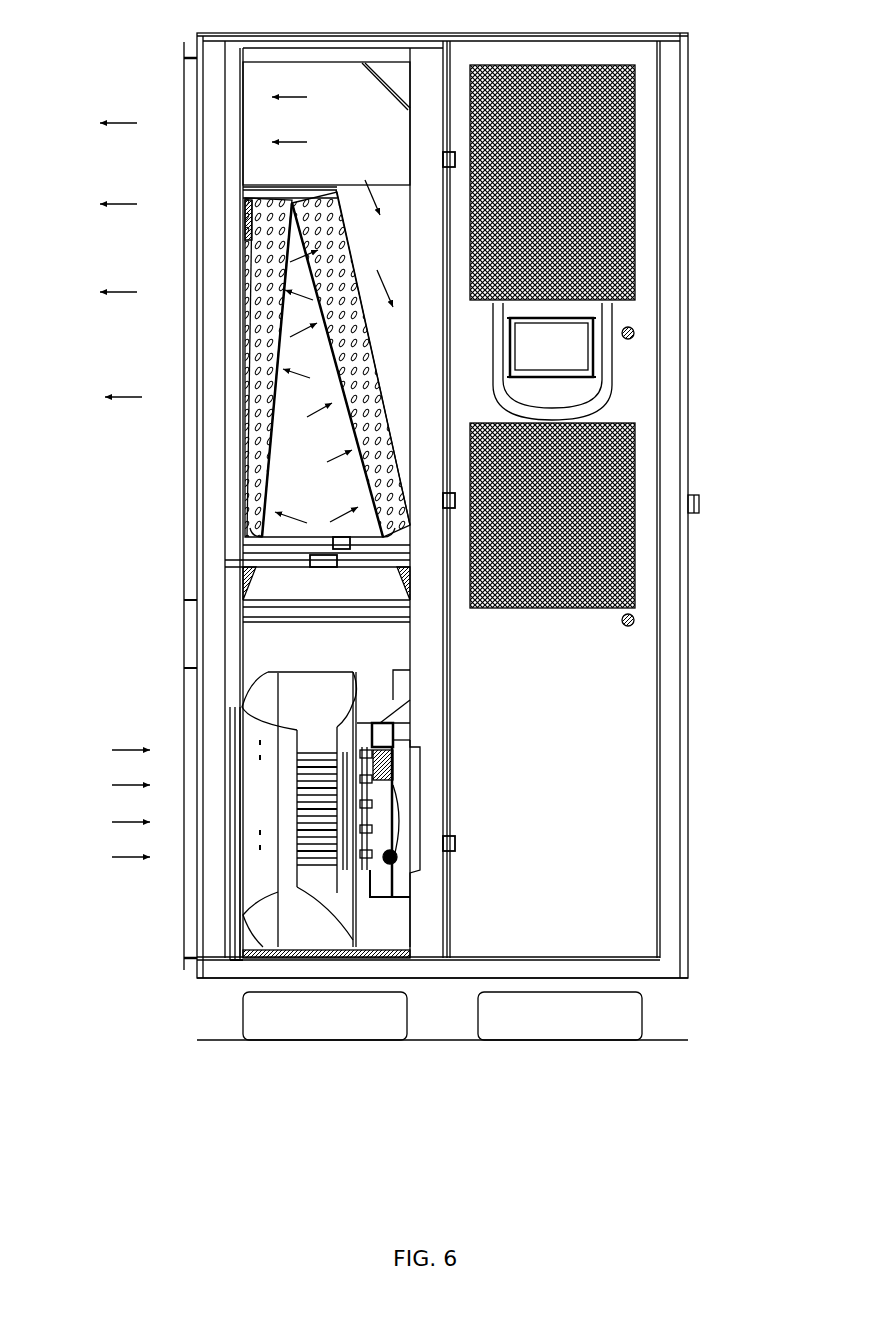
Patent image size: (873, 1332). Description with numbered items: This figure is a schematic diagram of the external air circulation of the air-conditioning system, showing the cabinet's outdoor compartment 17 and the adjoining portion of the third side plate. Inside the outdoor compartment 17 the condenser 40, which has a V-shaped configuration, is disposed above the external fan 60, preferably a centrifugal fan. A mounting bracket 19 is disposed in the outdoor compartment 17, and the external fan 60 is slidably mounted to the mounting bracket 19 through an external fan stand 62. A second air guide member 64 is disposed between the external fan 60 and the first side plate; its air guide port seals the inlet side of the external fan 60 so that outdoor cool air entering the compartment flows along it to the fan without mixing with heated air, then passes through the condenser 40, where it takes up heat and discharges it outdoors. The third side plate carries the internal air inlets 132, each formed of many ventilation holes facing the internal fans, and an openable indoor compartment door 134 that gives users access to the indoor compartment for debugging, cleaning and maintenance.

The outdoor compartment 17 is at (278, 128).
The condenser 40 is at (363, 472).
The internal air inlets 132 is at (637, 298).
The indoor compartment door 134 is at (607, 718).
The second air guide member 64 is at (262, 876).
The external fan 60 is at (328, 930).
The external fan stand 62 is at (380, 893).
The mounting bracket 19 is at (402, 905).